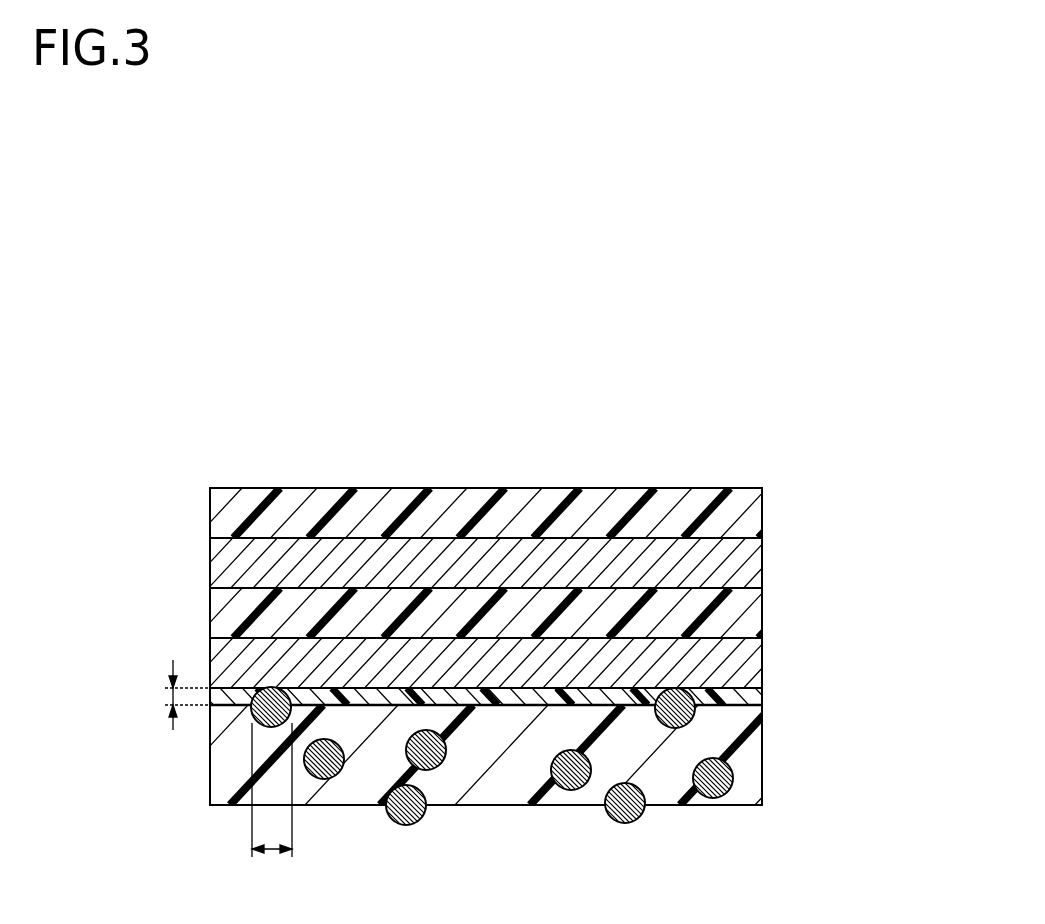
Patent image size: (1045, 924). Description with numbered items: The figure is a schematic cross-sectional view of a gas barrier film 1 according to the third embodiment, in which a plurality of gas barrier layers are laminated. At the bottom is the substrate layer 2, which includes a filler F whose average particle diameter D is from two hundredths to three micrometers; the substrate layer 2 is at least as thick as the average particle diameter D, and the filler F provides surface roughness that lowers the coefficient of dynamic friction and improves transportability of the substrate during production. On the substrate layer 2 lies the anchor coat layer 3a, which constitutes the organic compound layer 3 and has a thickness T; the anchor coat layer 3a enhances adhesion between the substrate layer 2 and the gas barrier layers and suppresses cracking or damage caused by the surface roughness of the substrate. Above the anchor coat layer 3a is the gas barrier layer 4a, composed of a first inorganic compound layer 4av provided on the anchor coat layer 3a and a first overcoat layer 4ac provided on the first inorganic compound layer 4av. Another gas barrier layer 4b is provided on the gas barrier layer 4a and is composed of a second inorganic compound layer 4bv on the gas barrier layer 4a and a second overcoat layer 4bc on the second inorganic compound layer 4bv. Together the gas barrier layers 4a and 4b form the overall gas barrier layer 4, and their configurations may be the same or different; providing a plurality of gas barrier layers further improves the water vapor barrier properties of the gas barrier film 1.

The gas barrier film 1 is at (514, 629).
The substrate layer 2 is at (464, 787).
The organic compound layer 3 is at (525, 705).
The anchor coat layer 3a is at (748, 698).
The gas barrier layer 4 is at (535, 588).
The gas barrier layer 4a is at (517, 638).
The first overcoat layer 4ac is at (746, 622).
The first inorganic compound layer 4av is at (746, 669).
The gas barrier layer 4b is at (517, 538).
The second overcoat layer 4bc is at (746, 521).
The second inorganic compound layer 4bv is at (746, 569).
The filler F is at (406, 826).
The average particle diameter D is at (272, 853).
The thickness T is at (168, 697).